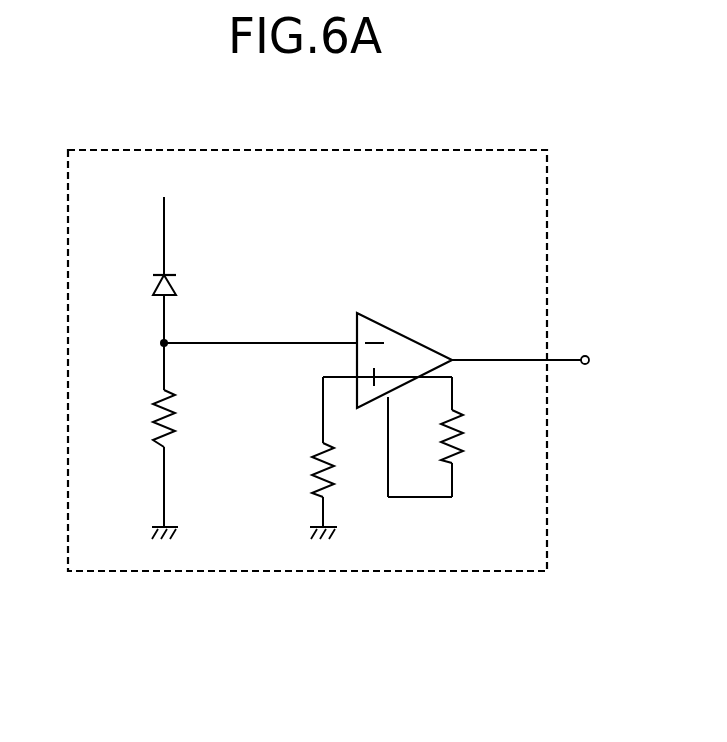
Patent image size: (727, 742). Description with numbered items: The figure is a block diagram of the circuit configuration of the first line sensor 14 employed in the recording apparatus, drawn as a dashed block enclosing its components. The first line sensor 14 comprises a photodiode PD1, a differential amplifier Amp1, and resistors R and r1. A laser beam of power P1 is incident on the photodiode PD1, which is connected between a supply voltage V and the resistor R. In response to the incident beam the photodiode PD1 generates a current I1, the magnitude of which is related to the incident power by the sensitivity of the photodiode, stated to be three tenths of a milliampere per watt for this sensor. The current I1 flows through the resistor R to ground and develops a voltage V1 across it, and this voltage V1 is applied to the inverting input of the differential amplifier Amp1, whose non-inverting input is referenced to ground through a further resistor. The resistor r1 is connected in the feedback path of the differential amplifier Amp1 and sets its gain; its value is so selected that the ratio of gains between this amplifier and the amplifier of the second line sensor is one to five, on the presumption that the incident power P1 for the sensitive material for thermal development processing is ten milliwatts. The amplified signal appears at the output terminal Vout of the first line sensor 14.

The first line sensor 14 is at (548, 244).
The photodiode PD1 is at (193, 309).
The power of the incident laser beam P1 is at (146, 281).
The supply voltage V is at (148, 222).
The photodiode current I1 is at (148, 312).
The resistor R is at (148, 441).
The voltage across resistor V1 is at (245, 533).
The differential amplifier Amp1 is at (407, 354).
The resistor r1 is at (424, 437).
The output voltage Vout is at (558, 361).